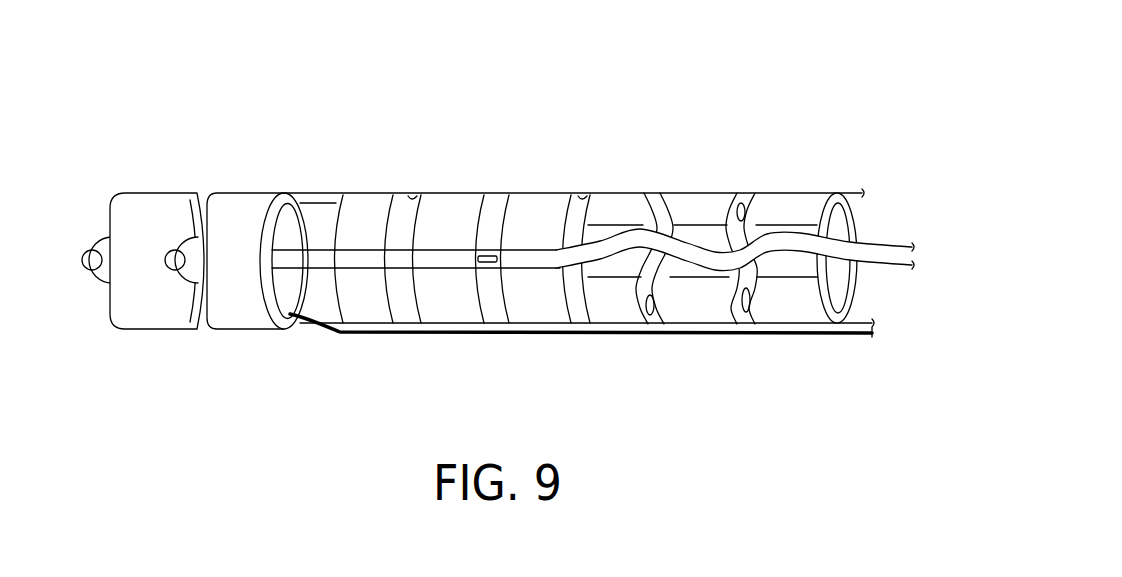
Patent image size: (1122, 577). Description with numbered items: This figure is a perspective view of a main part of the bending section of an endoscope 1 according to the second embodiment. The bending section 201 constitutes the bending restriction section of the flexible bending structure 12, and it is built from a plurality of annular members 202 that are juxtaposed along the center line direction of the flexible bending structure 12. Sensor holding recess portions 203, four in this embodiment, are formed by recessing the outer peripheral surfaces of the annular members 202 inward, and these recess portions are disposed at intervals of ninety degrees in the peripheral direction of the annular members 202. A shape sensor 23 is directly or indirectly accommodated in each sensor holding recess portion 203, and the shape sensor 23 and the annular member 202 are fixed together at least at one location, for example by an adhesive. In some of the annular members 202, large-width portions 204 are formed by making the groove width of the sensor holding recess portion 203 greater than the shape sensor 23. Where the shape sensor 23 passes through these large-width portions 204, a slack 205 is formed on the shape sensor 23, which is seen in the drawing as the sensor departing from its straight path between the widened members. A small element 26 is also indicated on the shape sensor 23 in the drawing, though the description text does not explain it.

The endoscope 1 is at (666, 105).
The flexible bending structure 12 is at (172, 178).
The shape sensor 23 is at (885, 250).
The sensor 26 is at (485, 253).
The bending section 201 is at (621, 340).
The annular member 202 is at (347, 213).
The sensor holding recess portion 203 is at (386, 245).
The large-width portion 204 is at (628, 215).
The slack 205 is at (773, 262).